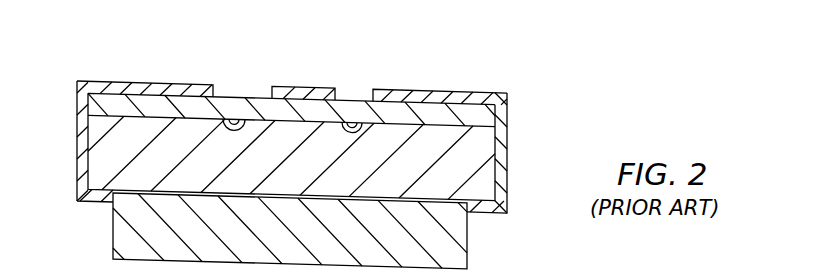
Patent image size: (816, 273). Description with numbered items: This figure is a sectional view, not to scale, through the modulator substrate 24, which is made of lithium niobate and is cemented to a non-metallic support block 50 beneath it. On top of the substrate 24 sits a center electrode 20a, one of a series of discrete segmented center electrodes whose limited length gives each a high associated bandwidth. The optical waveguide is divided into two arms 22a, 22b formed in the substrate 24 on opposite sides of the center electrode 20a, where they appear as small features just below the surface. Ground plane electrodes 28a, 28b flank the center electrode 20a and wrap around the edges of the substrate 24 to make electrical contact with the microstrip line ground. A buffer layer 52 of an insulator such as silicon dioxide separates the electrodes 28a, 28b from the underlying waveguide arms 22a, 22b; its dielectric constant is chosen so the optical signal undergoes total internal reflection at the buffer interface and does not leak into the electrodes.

The center electrode 20a is at (305, 90).
The optical waveguide arm 22a is at (351, 122).
The optical waveguide arm 22b is at (233, 120).
The substrate 24 is at (485, 152).
The ground plane electrode 28a is at (160, 92).
The ground plane electrode 28b is at (453, 93).
The non-metallic support block 50 is at (455, 235).
The buffer layer 52 is at (488, 112).